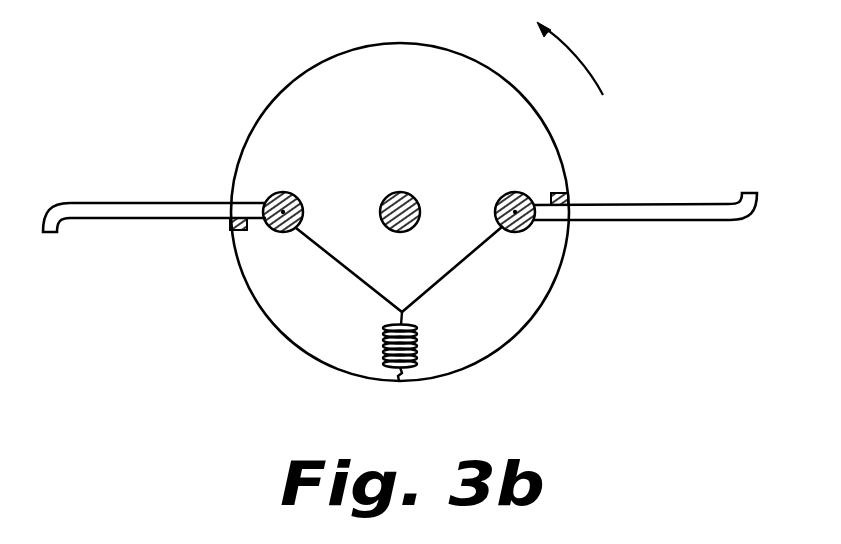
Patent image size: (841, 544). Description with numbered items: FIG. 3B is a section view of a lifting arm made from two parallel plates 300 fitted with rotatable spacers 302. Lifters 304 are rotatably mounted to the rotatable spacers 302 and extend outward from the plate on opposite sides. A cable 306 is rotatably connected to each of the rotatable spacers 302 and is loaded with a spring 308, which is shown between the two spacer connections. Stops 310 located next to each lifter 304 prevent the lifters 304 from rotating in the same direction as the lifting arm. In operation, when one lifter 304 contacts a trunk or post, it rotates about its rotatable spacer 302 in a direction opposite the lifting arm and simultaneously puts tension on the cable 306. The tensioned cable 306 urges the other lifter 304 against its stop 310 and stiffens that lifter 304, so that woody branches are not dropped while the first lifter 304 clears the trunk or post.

The parallel plates 300 is at (553, 291).
The rotatable spacers 302 is at (276, 195).
The lifters 304 is at (140, 218).
The cable 306 is at (460, 255).
The spring 308 is at (427, 360).
The stops 310 is at (240, 232).